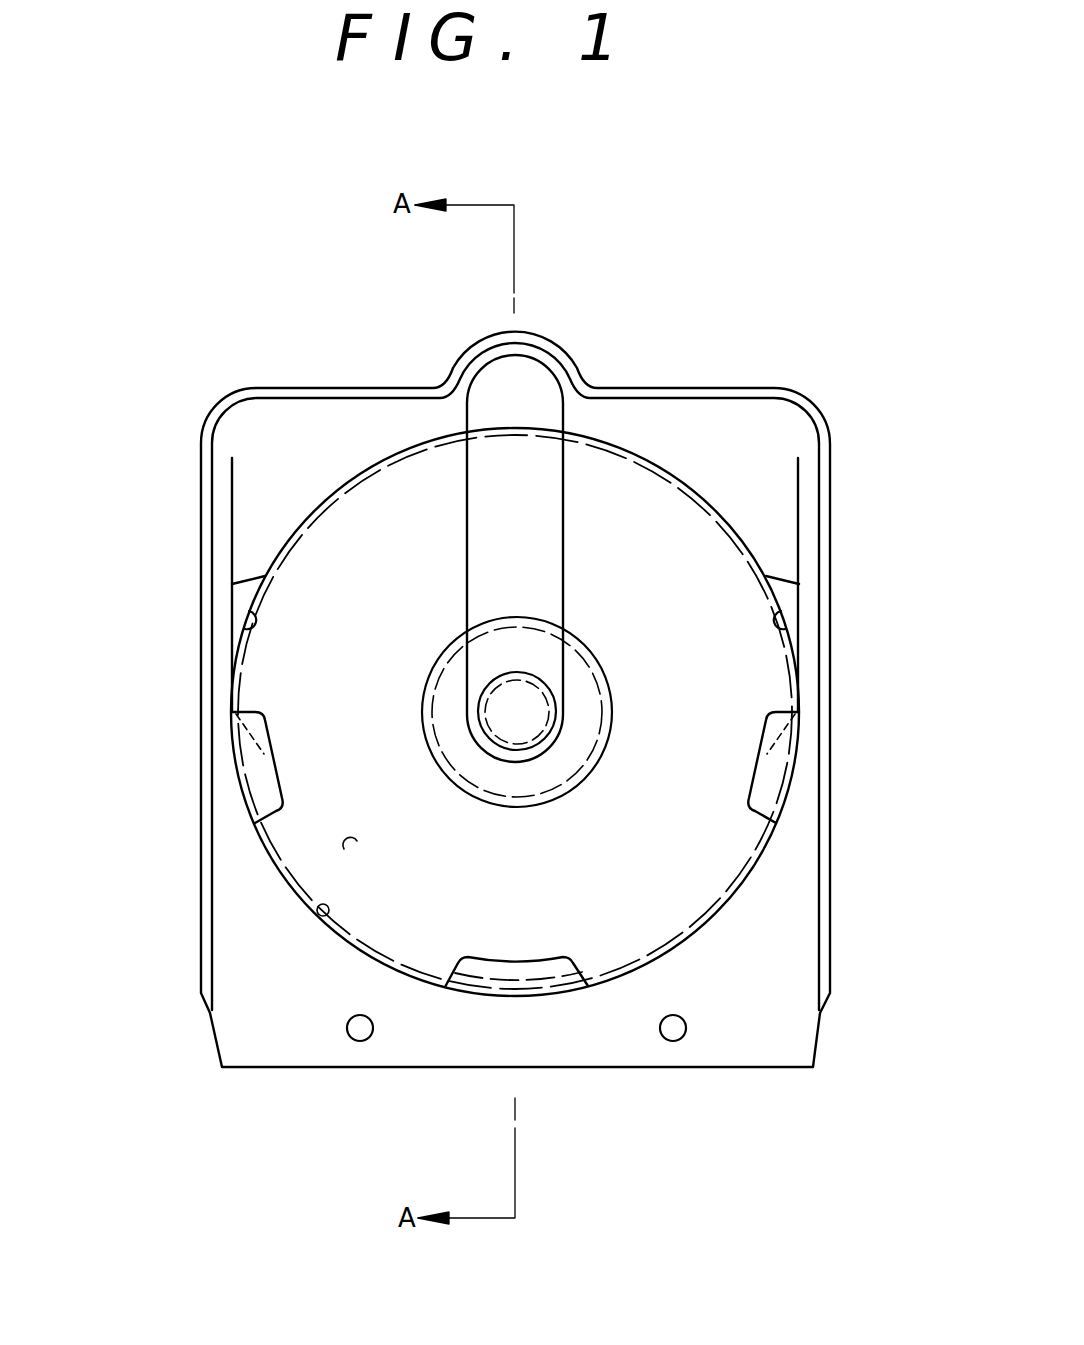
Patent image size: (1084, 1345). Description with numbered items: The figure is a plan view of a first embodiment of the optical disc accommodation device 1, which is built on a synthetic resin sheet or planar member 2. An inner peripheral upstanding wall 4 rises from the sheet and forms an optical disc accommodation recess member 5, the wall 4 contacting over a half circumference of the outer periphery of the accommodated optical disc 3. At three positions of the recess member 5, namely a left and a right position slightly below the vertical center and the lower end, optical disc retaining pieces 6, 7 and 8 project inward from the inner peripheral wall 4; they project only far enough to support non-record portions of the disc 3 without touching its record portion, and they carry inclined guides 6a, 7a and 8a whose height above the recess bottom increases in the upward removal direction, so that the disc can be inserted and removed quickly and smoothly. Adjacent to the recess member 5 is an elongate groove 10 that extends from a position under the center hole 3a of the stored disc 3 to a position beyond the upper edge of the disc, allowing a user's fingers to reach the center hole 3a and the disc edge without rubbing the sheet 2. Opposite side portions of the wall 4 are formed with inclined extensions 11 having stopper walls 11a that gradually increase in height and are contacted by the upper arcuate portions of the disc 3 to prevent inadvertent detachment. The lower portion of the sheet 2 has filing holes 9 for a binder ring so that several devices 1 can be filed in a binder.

The optical disc accommodation device 1 is at (692, 355).
The planar member 2 is at (303, 438).
The optical disc 3 is at (402, 448).
The center hole 3a is at (510, 748).
The inner peripheral upstanding wall 4 is at (322, 916).
The optical disc accommodation recess member 5 is at (350, 845).
The optical disc retaining piece 6 is at (263, 796).
The inclined guide 6a is at (255, 722).
The optical disc retaining piece 7 is at (772, 795).
The inclined guide 7a is at (775, 723).
The optical disc retaining piece 8 is at (536, 992).
The inclined guide 8a is at (477, 968).
The filing holes 9 is at (362, 1030).
The elongate groove 10 is at (550, 490).
The inclined extension 11 is at (244, 599).
The stopper wall 11a is at (263, 632).